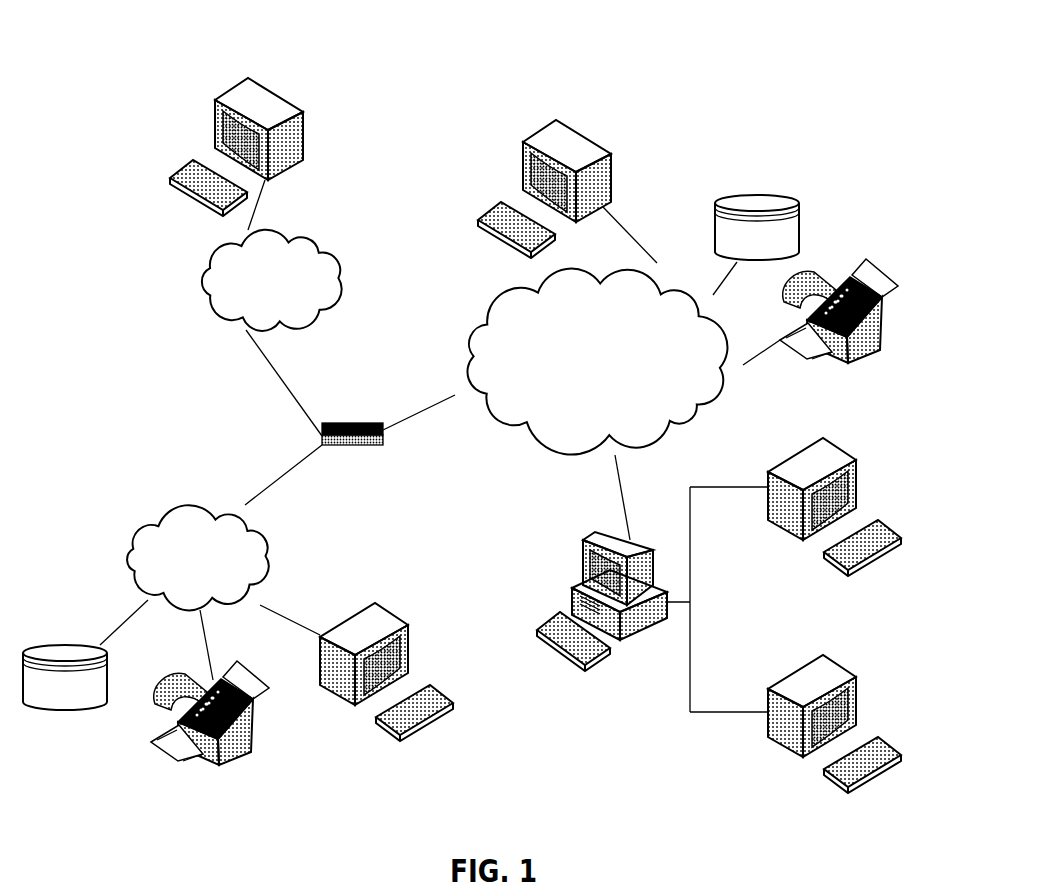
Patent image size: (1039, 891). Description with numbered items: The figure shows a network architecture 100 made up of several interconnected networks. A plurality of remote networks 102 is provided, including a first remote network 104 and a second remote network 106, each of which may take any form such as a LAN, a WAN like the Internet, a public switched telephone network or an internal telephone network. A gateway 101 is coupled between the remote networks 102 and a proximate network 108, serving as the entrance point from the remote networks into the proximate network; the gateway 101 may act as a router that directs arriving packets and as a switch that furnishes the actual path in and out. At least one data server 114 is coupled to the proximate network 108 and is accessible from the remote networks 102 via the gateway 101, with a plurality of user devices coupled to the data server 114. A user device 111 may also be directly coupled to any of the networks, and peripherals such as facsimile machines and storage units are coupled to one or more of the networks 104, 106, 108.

The architecture 100 is at (150, 62).
The gateway 101 is at (337, 423).
The remote networks 102 is at (174, 346).
The first remote network 104 is at (123, 532).
The second remote network 106 is at (342, 252).
The proximate network 108 is at (703, 425).
The user device 111 is at (612, 153).
The data server 114 is at (583, 552).